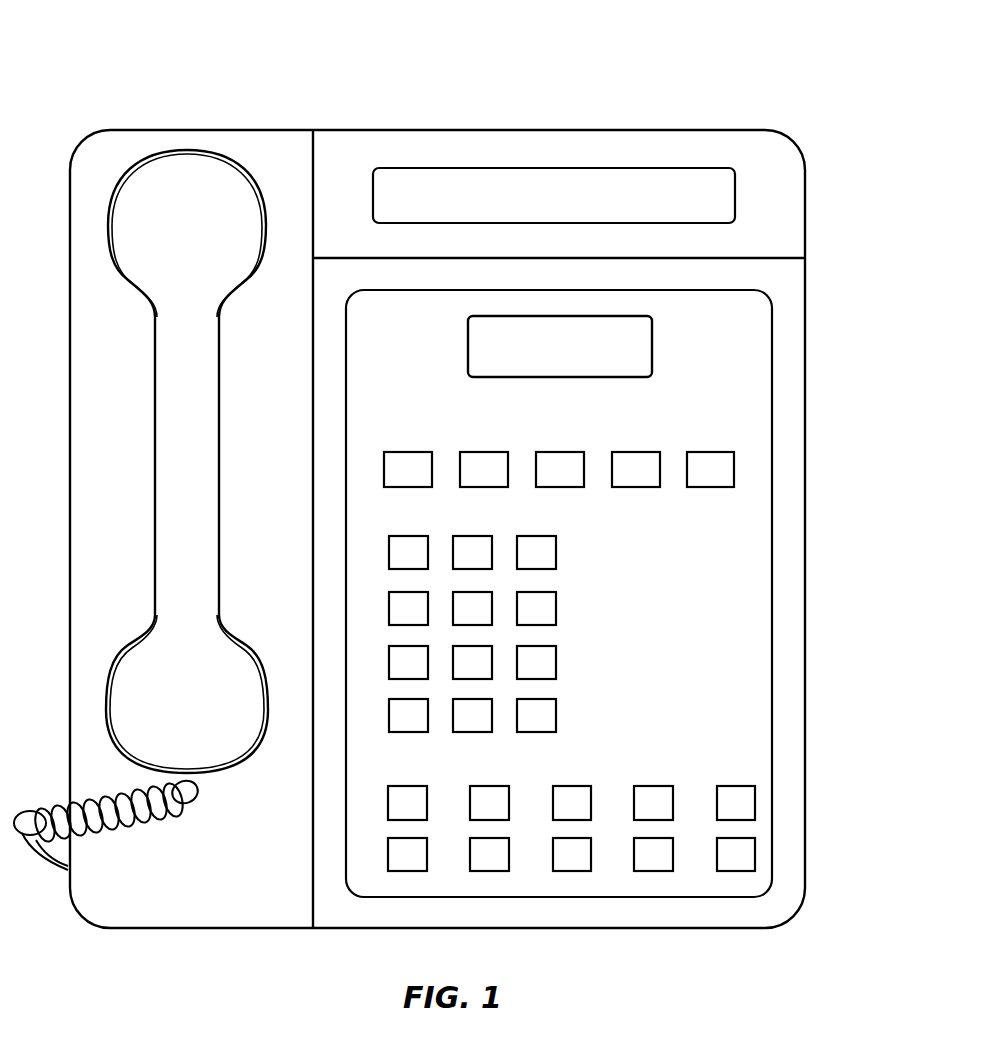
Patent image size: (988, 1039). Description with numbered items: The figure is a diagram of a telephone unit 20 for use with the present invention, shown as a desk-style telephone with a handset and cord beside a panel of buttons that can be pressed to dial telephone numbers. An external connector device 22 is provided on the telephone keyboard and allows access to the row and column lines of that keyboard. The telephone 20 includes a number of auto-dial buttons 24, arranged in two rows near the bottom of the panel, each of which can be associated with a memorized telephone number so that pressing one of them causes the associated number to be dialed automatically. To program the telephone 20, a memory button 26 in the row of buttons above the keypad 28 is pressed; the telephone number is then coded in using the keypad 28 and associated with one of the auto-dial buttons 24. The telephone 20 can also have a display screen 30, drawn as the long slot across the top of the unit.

The telephone unit 20 is at (113, 64).
The external connector device 22 is at (652, 347).
The auto-dial buttons 24 is at (816, 785).
The memory button 26 is at (734, 468).
The keypad 28 is at (570, 530).
The display screen 30 is at (735, 196).